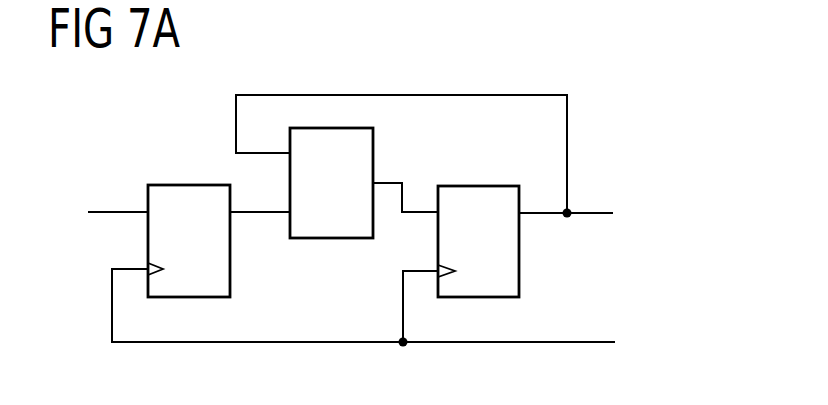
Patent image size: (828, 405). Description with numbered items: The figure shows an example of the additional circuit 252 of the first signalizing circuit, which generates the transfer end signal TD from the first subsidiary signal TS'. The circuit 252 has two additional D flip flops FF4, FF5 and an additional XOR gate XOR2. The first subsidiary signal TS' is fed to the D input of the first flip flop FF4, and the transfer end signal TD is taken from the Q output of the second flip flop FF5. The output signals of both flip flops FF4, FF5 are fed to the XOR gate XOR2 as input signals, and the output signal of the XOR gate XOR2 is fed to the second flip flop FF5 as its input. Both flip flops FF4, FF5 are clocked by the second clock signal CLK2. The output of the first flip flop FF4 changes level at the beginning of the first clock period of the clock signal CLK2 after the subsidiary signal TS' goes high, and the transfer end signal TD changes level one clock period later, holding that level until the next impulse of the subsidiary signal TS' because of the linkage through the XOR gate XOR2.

The additional circuit 252 is at (606, 84).
The first D flip flop FF4 is at (188, 185).
The second D flip flop FF5 is at (480, 186).
The additional XOR gate XOR2 is at (331, 183).
The first subsidiary signal TS' is at (96, 213).
The transfer end signal TD is at (588, 212).
The second clock signal CLK2 is at (401, 317).